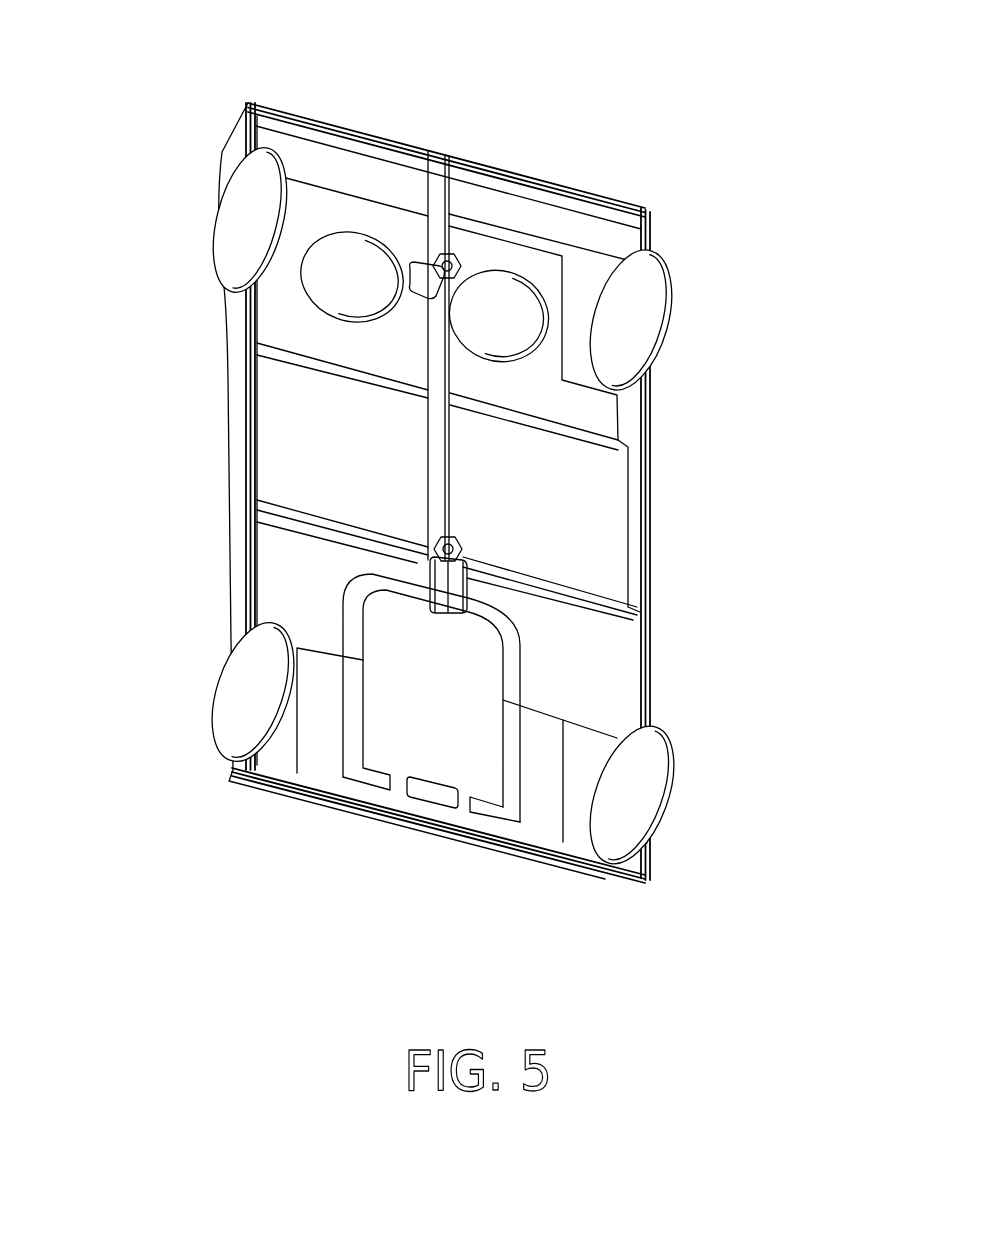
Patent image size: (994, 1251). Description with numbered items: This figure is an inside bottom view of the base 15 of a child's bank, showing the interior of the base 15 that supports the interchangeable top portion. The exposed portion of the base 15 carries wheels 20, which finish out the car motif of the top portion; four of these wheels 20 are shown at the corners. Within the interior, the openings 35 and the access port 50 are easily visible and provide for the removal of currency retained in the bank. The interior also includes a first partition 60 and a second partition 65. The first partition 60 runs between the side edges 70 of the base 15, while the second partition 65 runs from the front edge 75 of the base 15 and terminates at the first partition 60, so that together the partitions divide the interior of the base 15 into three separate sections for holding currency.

The base portion 15 is at (427, 457).
The wheels 20 is at (247, 207).
The openings 35 is at (332, 233).
The access port 50 is at (420, 832).
The first partition 60 is at (565, 590).
The second partition 65 is at (455, 258).
The side edges 70 is at (225, 450).
The front edge 75 is at (357, 122).